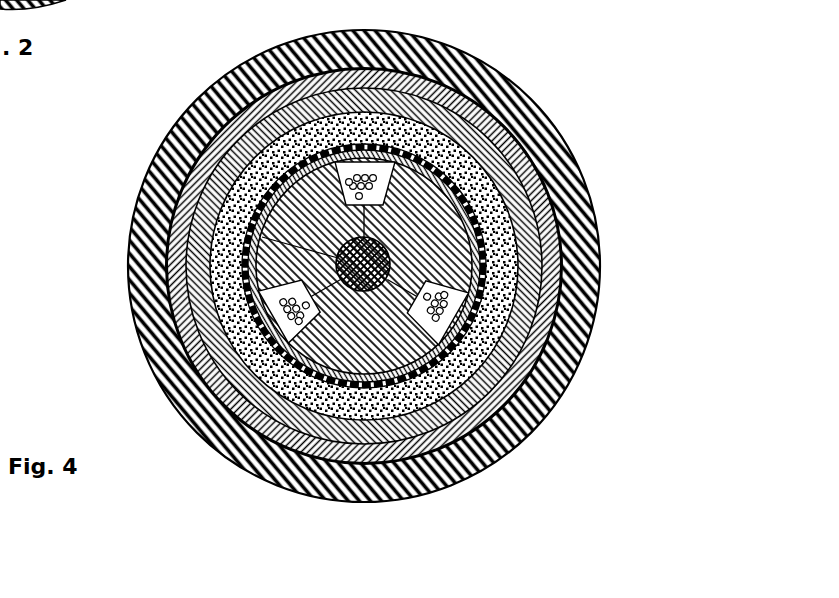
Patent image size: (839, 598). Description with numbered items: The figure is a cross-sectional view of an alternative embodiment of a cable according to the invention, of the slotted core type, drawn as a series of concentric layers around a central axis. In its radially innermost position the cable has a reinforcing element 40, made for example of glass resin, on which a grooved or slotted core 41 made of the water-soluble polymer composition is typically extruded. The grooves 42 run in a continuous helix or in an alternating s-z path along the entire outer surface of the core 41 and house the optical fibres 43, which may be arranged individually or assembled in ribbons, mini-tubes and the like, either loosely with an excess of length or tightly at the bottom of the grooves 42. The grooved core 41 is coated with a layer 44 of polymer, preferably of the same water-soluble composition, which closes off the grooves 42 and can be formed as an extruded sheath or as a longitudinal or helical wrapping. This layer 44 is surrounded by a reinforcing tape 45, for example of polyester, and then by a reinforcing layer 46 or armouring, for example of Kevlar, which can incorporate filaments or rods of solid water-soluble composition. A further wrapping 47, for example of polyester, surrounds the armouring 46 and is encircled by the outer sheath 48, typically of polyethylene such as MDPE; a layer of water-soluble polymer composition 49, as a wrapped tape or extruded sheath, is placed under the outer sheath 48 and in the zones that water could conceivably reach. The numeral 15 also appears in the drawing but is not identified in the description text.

The cable core 15 is at (490, 283).
The reinforcing element 40 is at (173, 123).
The grooved core 41 is at (505, 185).
The grooves 42 is at (545, 327).
The optical fibres 43 is at (358, 73).
The layer of polymer 44 is at (505, 434).
The reinforcing tape 45 is at (395, 458).
The reinforcing layer 46 is at (298, 442).
The wrapping 47 is at (215, 378).
The outer sheath 48 is at (145, 300).
The layer of water-soluble polymer composition 49 is at (268, 432).